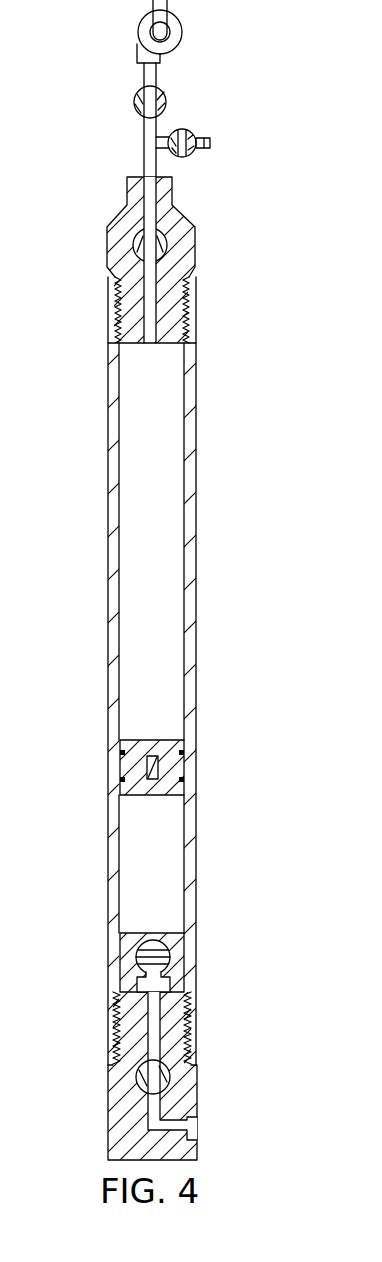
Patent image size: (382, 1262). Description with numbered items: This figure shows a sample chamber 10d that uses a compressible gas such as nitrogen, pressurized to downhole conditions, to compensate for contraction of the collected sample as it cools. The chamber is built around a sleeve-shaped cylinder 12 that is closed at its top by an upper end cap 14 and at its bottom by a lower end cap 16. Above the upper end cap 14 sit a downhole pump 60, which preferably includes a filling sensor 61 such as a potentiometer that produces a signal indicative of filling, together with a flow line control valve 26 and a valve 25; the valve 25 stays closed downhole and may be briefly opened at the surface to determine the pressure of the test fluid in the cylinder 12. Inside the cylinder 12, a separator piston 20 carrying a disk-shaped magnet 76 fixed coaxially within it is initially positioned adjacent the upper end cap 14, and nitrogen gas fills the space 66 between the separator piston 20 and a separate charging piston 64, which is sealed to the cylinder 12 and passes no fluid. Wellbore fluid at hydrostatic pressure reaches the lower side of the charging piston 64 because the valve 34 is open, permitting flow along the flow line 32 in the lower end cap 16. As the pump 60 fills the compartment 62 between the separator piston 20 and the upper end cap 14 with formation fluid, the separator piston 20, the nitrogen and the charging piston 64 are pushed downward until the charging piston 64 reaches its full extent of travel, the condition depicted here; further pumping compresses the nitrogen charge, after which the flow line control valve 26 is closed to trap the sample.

The sample chamber 10d is at (57, 184).
The downhole pump 60 is at (137, 33).
The filling sensor 61 is at (137, 48).
The flow line control valve 26 is at (134, 102).
The valve 25 is at (193, 134).
The upper end cap 14 is at (197, 240).
The cylinder 12 is at (197, 500).
The compartment 62 is at (163, 560).
The magnet 76 is at (146, 762).
The separator piston 20 is at (148, 797).
The space 66 is at (166, 881).
The charging piston 64 is at (186, 985).
The flow line 32 is at (113, 1038).
The valve 34 is at (197, 1082).
The lower end cap 16 is at (108, 1108).